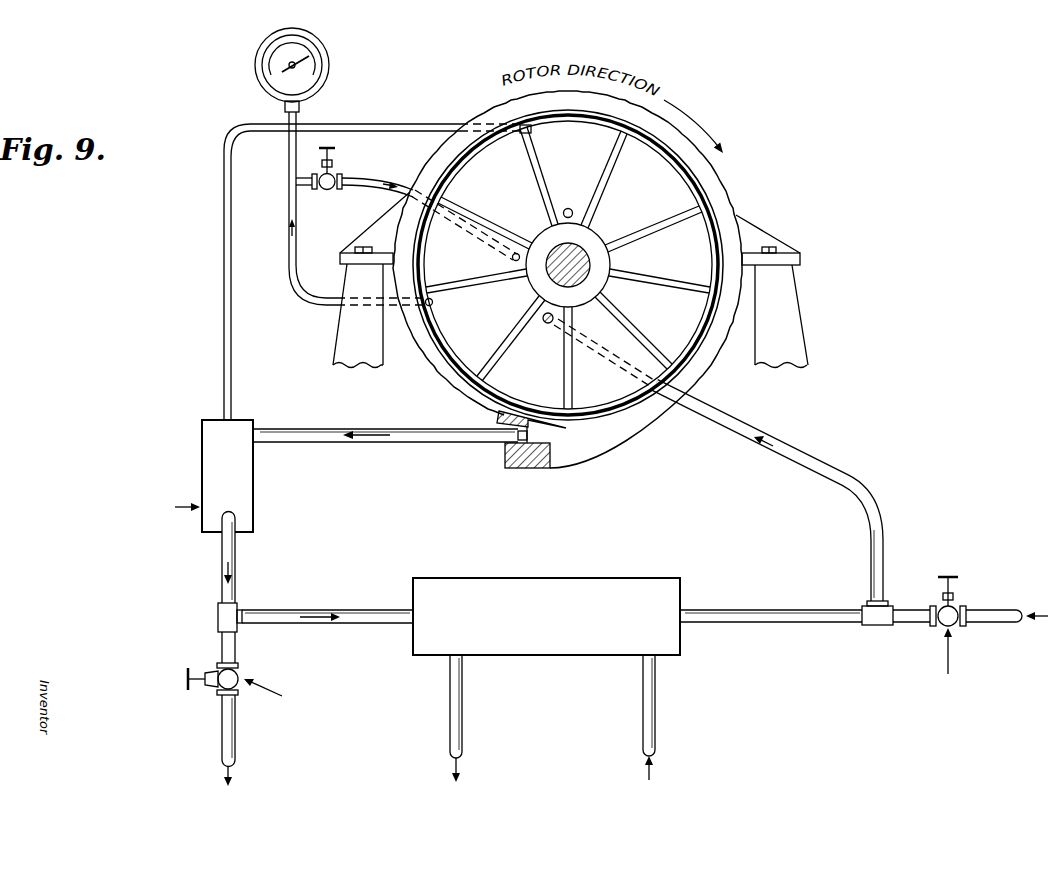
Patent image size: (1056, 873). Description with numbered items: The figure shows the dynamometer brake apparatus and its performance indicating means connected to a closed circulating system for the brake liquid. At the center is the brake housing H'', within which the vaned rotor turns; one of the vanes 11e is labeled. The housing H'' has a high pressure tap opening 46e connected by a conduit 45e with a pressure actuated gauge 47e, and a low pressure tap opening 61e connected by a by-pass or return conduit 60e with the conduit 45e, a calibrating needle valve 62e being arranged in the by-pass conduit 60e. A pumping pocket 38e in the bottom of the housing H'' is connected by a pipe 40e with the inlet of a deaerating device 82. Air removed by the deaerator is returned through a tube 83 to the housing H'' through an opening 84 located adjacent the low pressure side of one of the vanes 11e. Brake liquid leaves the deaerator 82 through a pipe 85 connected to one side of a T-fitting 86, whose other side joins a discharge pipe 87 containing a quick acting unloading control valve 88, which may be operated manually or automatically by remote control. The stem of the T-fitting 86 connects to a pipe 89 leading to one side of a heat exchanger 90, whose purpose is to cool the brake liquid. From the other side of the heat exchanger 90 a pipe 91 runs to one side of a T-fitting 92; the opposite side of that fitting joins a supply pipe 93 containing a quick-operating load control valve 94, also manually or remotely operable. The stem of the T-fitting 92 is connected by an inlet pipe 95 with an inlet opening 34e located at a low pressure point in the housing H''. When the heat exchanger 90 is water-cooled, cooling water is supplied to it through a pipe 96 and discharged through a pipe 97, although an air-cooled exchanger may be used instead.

The vane 11e is at (541, 188).
The inlet opening 34e is at (547, 324).
The pumping pocket 38e is at (534, 468).
The pipe 40e is at (398, 428).
The conduit 45e is at (299, 292).
The high pressure tap opening 46e is at (435, 304).
The pressure actuated gauge 47e is at (256, 66).
The by-pass or return conduit 60e is at (370, 178).
The low pressure tap opening 61e is at (513, 258).
The calibrating needle valve 62e is at (329, 191).
The housing H'' is at (567, 279).
The deaerating device 82 is at (255, 495).
The tube 83 is at (224, 272).
The opening 84 is at (533, 130).
The pipe 85 is at (237, 570).
The T-fitting 86 is at (217, 621).
The discharge pipe 87 is at (236, 652).
The quick acting unloading control valve 88 is at (186, 678).
The pipe 89 is at (360, 611).
The heat exchanger 90 is at (545, 578).
The pipe 91 is at (755, 610).
The T-fitting 92 is at (872, 627).
The supply pipe 93 is at (1000, 610).
The quick-operating load control valve 94 is at (948, 577).
The inlet pipe 95 is at (827, 465).
The pipe 96 is at (654, 712).
The pipe 97 is at (463, 721).